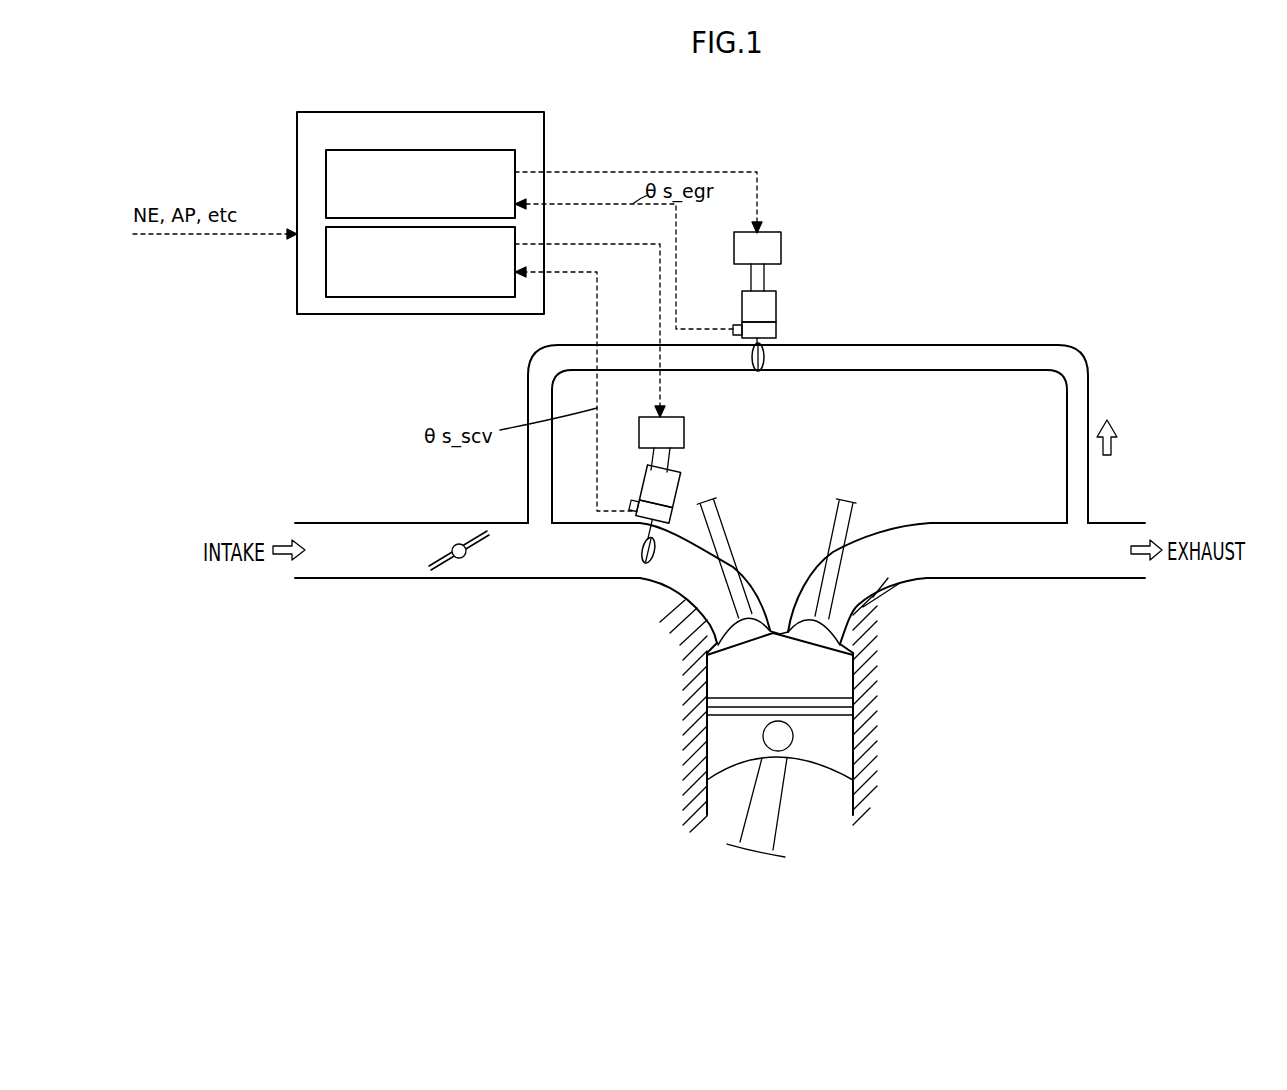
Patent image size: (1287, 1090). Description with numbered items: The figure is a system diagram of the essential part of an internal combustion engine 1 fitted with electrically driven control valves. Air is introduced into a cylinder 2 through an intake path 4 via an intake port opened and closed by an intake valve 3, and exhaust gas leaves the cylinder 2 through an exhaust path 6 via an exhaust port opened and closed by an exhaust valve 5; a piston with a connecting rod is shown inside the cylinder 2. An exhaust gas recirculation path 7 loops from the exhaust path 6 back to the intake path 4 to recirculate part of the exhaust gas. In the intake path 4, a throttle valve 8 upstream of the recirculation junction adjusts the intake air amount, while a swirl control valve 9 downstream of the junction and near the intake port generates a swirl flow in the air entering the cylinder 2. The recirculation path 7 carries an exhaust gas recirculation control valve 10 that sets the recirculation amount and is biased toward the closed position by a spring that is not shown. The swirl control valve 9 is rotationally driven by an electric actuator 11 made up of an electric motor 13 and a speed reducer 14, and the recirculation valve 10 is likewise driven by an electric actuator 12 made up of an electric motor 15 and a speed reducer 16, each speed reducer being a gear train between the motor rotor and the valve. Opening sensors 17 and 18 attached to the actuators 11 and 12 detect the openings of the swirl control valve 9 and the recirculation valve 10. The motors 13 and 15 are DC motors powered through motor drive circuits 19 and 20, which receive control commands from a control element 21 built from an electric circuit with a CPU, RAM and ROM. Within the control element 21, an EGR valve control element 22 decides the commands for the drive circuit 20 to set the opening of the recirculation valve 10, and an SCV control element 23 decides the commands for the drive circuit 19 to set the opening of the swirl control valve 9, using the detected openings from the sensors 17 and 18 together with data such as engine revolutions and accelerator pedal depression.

The internal combustion engine 1 is at (983, 721).
The cylinder 2 is at (846, 686).
The intake valve 3 is at (720, 628).
The intake path 4 is at (483, 580).
The exhaust valve 5 is at (845, 623).
The exhaust path 6 is at (1035, 579).
The exhaust gas recirculation path 7 is at (877, 371).
The throttle valve 8 is at (440, 560).
The swirl control valve 9 is at (645, 550).
The exhaust gas recirculation control valve 10 is at (762, 362).
The electric actuator 11 is at (650, 510).
The electric actuator 12 is at (770, 297).
The electric motor 13 is at (680, 496).
The speed reducer 14 is at (678, 520).
The electric motor 15 is at (776, 305).
The speed reducer 16 is at (776, 329).
The opening sensor 17 is at (632, 506).
The opening sensor 18 is at (735, 325).
The motor drive circuit 19 is at (684, 427).
The motor drive circuit 20 is at (781, 240).
The control element 21 is at (544, 132).
The EGR valve control element 22 is at (326, 182).
The SCV control element 23 is at (326, 272).